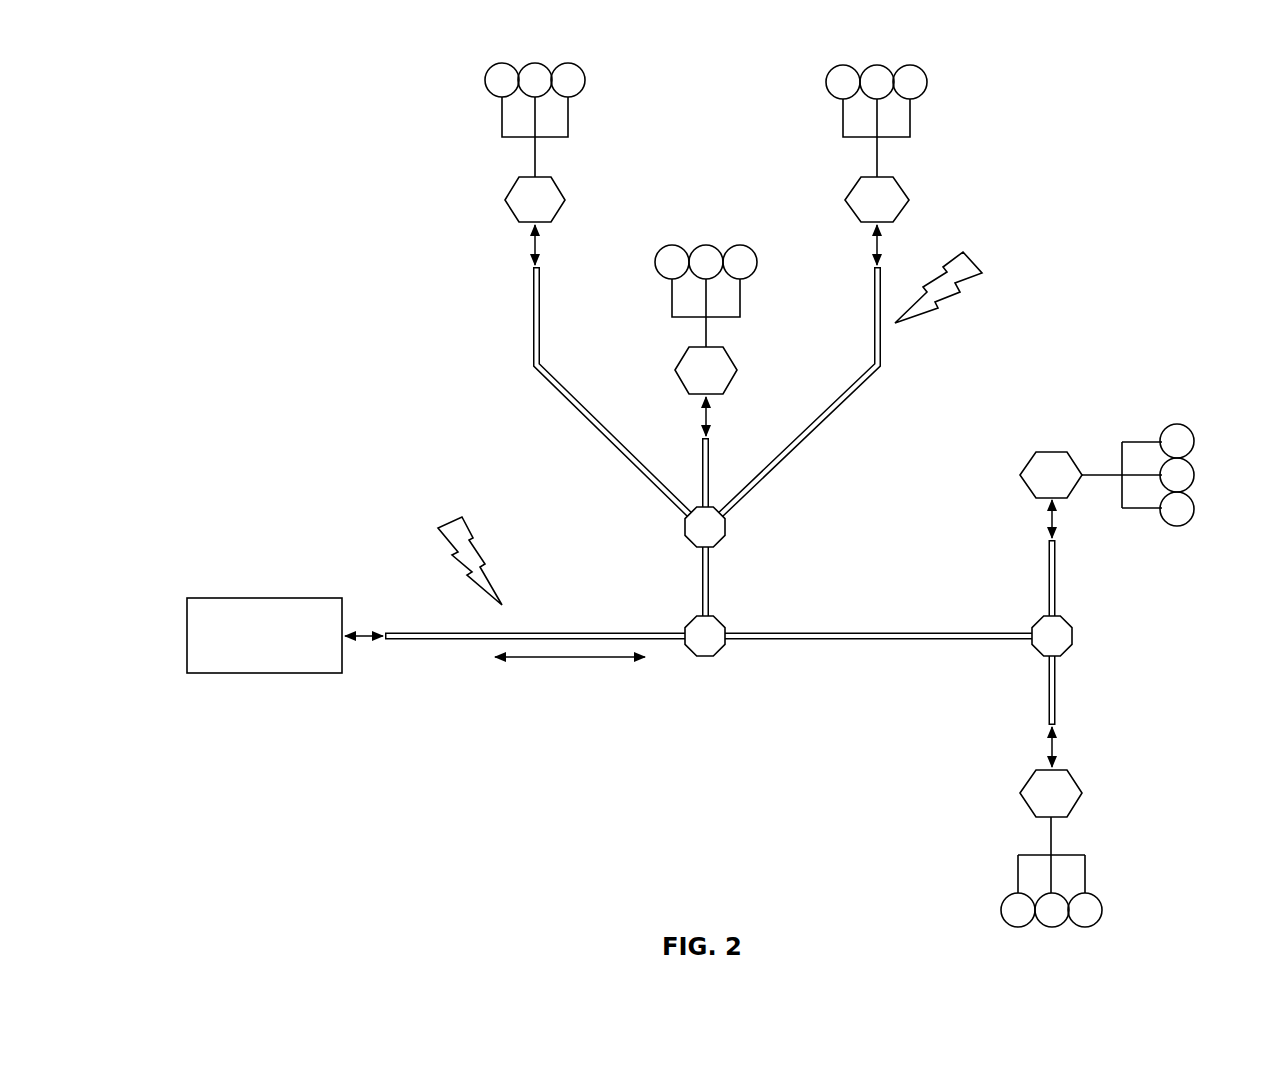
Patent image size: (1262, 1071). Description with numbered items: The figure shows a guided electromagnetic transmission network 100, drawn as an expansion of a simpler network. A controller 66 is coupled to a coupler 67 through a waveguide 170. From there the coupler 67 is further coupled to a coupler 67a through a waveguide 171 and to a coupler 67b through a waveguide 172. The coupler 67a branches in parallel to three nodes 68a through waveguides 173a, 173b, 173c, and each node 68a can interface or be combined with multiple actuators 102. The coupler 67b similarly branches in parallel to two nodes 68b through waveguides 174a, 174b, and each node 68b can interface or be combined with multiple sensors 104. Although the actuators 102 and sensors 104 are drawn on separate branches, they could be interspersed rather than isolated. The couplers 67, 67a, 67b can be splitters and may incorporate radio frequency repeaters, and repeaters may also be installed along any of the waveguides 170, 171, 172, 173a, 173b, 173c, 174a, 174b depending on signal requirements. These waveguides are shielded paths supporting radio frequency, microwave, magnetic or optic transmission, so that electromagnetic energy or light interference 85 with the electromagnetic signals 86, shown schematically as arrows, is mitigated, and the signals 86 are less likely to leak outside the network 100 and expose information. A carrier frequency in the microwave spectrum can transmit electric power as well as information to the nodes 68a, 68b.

The guided electromagnetic transmission network 100 is at (338, 72).
The controller 66 is at (264, 635).
The coupler 67 is at (705, 658).
The coupler 67a is at (723, 541).
The coupler 67b is at (1073, 641).
The node 68a is at (556, 185).
The node 68b is at (1055, 452).
The electromagnetic energy or light interference 85 is at (455, 520).
The electromagnetic signals 86 is at (573, 660).
The actuators 102 is at (578, 83).
The sensors 104 is at (1177, 425).
The waveguide 170 is at (410, 643).
The waveguide 171 is at (700, 580).
The waveguide 172 is at (850, 643).
The waveguide 173a is at (532, 320).
The waveguide 173b is at (700, 445).
The waveguide 173c is at (800, 452).
The waveguide 174a is at (1047, 585).
The waveguide 174b is at (1047, 700).